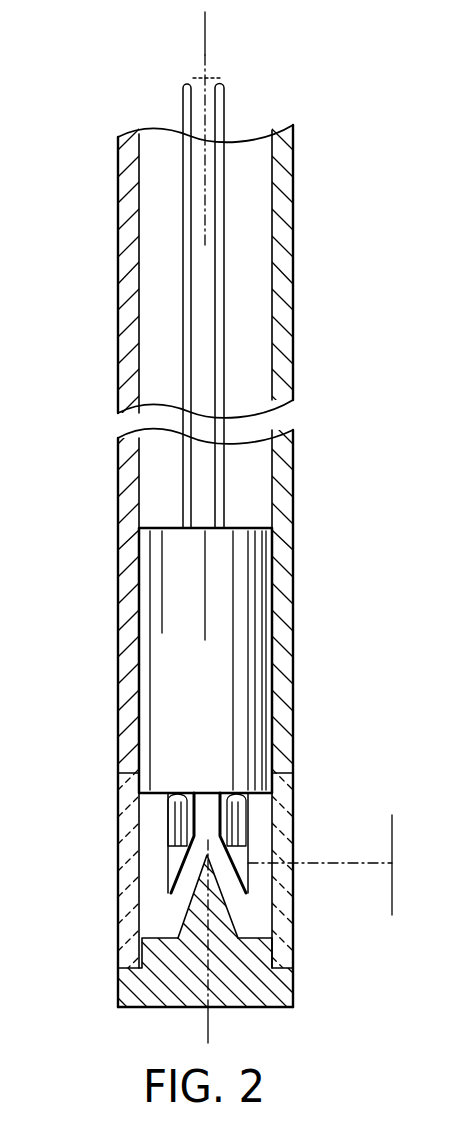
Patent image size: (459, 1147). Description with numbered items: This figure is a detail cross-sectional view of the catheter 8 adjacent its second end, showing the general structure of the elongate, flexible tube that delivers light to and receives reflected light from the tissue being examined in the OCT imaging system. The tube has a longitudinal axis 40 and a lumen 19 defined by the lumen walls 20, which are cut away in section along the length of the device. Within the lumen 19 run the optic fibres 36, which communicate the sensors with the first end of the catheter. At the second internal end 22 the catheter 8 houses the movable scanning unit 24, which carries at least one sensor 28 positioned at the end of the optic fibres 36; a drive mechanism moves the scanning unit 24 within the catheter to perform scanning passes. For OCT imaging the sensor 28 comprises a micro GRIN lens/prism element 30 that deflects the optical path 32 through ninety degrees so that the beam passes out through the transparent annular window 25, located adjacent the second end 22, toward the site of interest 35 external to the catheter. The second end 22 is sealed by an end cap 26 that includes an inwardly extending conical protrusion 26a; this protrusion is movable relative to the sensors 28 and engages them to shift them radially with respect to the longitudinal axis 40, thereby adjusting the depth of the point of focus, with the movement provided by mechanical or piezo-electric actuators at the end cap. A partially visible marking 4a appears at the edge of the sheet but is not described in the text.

The catheter 8 is at (310, 191).
The lumen 19 is at (233, 158).
The lumen walls 20 is at (125, 241).
The second internal end 22 is at (358, 893).
The movable scanning unit 24 is at (225, 623).
The transparent annular window 25 is at (132, 926).
The end cap 26 is at (290, 990).
The conical protrusion 26a is at (188, 900).
The sensor 28 is at (168, 823).
The micro GRIN lens/prism element 30 is at (170, 868).
The optical path 32 is at (248, 808).
The site of interest 35 is at (430, 882).
The optic fibres 36 is at (215, 106).
The longitudinal axis 40 is at (205, 33).
The partial reference 4a is at (450, 224).